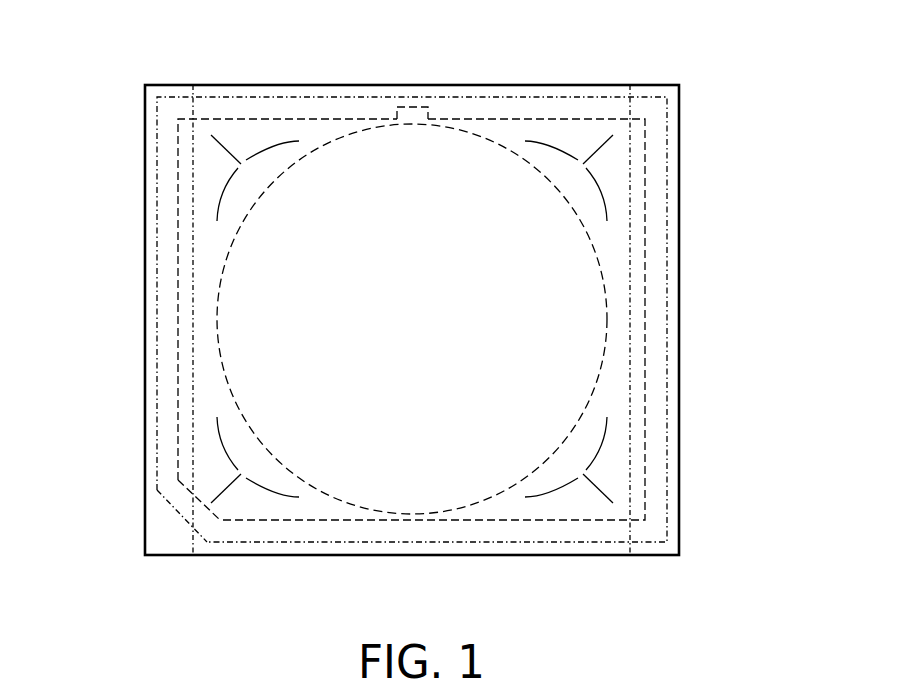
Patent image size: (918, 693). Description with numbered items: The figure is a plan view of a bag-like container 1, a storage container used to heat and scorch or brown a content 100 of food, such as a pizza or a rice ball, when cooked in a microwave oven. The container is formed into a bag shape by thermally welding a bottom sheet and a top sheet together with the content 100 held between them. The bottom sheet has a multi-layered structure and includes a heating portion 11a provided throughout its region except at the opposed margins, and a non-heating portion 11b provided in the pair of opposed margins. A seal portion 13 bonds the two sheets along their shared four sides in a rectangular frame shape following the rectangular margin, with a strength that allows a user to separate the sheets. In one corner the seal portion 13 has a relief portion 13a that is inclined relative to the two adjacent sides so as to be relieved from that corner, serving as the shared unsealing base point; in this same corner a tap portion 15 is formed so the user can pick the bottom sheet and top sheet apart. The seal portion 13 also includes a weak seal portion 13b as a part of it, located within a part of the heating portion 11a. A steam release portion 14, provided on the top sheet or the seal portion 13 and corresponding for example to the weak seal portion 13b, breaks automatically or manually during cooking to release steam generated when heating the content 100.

The bag-like container 1 is at (709, 224).
The heating portion 11a is at (266, 88).
The non-heating portion 11b is at (169, 90).
The seal portion 13 is at (660, 458).
The relief portion 13a is at (189, 500).
The weak seal portion 13b is at (413, 106).
The steam release portion 14 is at (410, 100).
The tap portion 15 is at (158, 535).
The content 100 is at (410, 500).